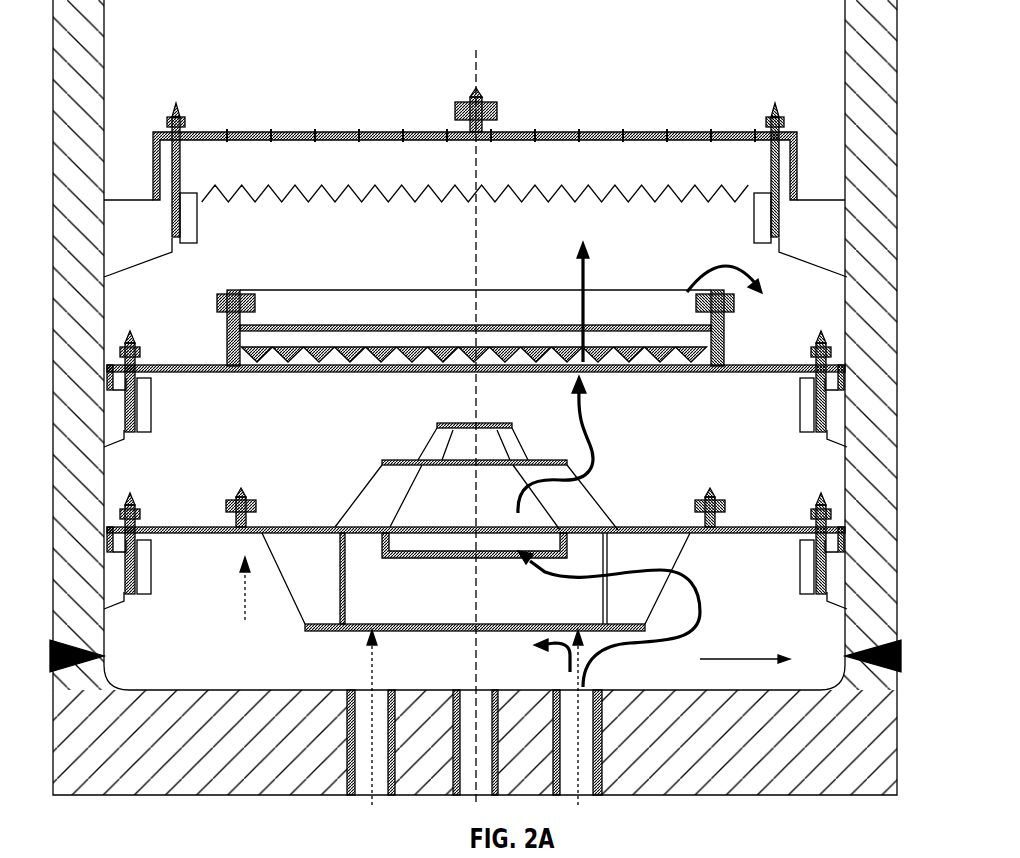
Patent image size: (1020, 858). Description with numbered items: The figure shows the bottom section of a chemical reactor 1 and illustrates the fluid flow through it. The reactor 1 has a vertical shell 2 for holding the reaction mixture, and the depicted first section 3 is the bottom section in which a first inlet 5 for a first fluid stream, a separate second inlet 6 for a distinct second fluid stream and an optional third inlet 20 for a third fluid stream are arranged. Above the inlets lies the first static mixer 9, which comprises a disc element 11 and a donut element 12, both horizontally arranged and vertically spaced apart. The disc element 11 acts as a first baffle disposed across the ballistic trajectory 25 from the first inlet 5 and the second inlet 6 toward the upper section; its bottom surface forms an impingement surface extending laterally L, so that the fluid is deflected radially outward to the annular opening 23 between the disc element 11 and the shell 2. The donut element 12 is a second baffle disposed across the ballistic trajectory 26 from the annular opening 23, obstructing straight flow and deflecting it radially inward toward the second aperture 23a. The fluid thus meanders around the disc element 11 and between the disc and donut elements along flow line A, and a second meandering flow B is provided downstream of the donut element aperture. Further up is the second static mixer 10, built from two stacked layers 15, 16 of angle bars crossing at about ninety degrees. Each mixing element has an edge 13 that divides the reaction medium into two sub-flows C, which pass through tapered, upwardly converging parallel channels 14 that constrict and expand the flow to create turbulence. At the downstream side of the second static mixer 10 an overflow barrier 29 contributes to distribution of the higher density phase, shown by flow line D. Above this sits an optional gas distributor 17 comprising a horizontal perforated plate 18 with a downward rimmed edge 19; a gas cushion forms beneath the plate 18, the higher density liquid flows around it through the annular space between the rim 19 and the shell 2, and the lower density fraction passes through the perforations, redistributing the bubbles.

The chemical reactor 1 is at (897, 212).
The vertical shell 2 is at (897, 150).
The first section 3 is at (897, 288).
The first inlet 5 is at (405, 688).
The second inlet 6 is at (615, 692).
The first static mixer 9 is at (601, 495).
The second static mixer 10 is at (617, 304).
The disc element 11 is at (571, 623).
The donut element 12 is at (300, 527).
The edge 13 is at (652, 362).
The channels 14 is at (633, 374).
The first layer of angle bars 15 is at (362, 372).
The second layer of angle bars 16 is at (368, 326).
The gas distributor 17 is at (650, 131).
The horizontal perforated plate 18 is at (545, 130).
The downward rimmed edge 19 is at (797, 178).
The third inlet 20 is at (488, 688).
The annular opening 23 is at (757, 549).
The second aperture 23a is at (423, 550).
The ballistic trajectory 25 is at (355, 632).
The ballistic trajectory 26 is at (240, 600).
The overflow barrier 29 is at (732, 308).
The flow line A is at (700, 580).
The second meandering flow B is at (572, 422).
The sub-flows C is at (578, 275).
The flow line D is at (700, 248).
The lateral direction L is at (743, 650).